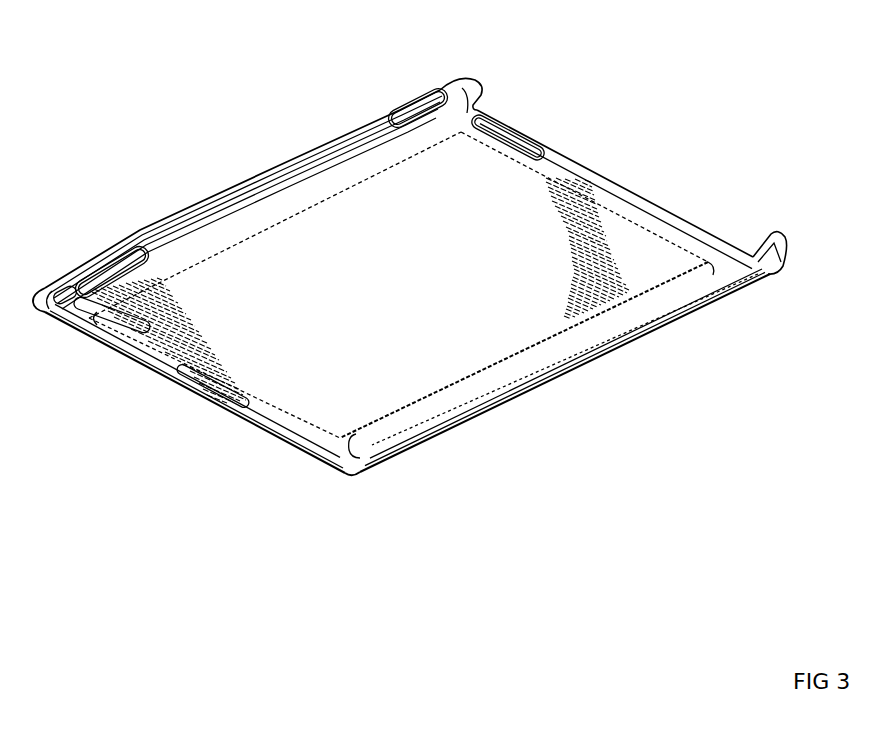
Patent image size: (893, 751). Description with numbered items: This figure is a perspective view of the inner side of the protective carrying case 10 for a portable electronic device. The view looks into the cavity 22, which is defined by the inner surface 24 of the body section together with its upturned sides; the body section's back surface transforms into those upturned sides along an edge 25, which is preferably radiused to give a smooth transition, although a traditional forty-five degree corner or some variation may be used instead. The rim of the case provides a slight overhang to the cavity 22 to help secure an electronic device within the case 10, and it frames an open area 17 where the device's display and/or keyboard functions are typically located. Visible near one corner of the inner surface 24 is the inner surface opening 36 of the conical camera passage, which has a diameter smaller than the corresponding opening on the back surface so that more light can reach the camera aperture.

The protective carrying case 10 is at (703, 58).
The open area 17 is at (291, 220).
The cavity 22 is at (703, 196).
The inner surface 24 is at (472, 270).
The edge 25 is at (412, 118).
The inner surface opening 36 is at (93, 328).